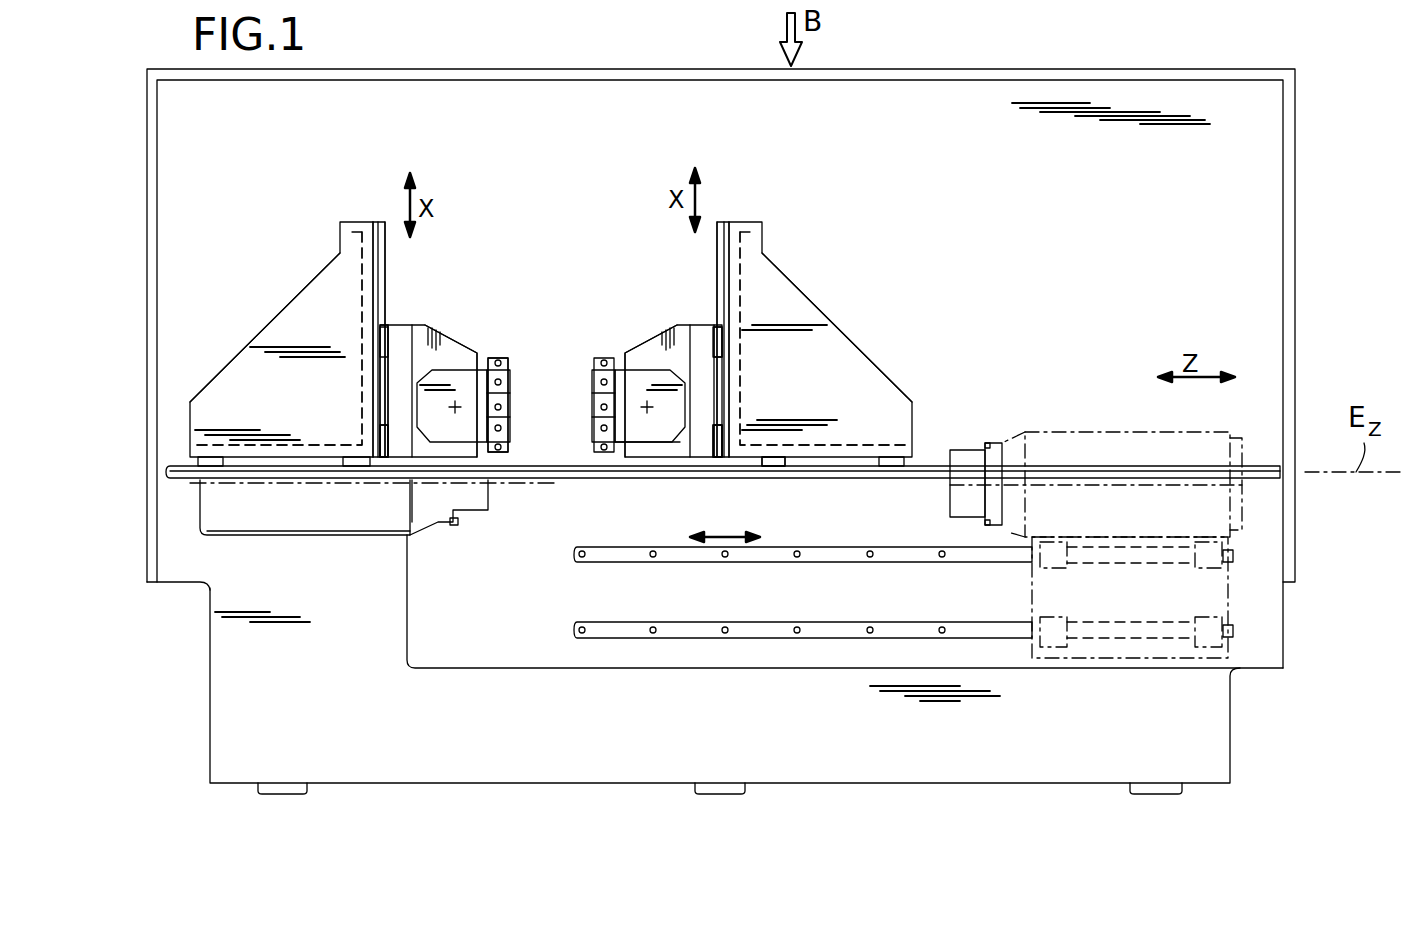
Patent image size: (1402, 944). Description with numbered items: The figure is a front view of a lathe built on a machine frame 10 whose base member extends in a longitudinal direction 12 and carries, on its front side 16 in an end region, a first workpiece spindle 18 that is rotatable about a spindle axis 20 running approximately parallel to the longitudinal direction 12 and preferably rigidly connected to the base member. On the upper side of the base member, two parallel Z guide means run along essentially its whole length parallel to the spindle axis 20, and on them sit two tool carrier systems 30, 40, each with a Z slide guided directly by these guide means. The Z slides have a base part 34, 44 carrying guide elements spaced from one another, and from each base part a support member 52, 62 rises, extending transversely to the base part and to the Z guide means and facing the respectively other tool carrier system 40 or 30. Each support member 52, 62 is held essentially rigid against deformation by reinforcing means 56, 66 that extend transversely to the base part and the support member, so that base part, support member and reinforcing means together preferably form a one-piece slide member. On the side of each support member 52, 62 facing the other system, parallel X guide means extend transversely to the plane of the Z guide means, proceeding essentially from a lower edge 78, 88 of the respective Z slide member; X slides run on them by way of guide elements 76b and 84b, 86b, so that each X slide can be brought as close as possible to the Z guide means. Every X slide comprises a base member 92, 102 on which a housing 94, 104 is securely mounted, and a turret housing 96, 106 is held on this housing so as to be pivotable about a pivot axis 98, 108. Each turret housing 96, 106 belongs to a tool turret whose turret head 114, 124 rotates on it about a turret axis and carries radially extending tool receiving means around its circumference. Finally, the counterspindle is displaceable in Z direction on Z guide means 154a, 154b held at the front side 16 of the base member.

The machine frame 10 is at (762, 746).
The longitudinal direction 12 is at (732, 537).
The front side 16 is at (443, 628).
The first workpiece spindle 18 is at (240, 512).
The spindle axis 20 is at (292, 487).
The tool carrier system 30 is at (258, 328).
The base part 34 is at (290, 442).
The tool carrier system 40 is at (795, 276).
The base part 44 is at (838, 450).
The support member 52 is at (373, 262).
The reinforcing means 56 is at (303, 320).
The support member 62 is at (735, 263).
The reinforcing means 66 is at (820, 327).
The guide element 76b is at (400, 458).
The lower edge 78 is at (385, 457).
The guide element 84b is at (725, 350).
The guide element 86b is at (745, 440).
The lower edge 88 is at (723, 452).
The base member 92 is at (400, 347).
The housing 94 is at (430, 343).
The turret housing 96 is at (425, 442).
The pivot axis 98 is at (455, 410).
The base member 102 is at (703, 325).
The housing 104 is at (668, 330).
The turret housing 106 is at (622, 447).
The pivot axis 108 is at (650, 412).
The turret head 114 is at (500, 360).
The turret head 124 is at (600, 360).
The Z guide means 154a is at (778, 632).
The Z guide means 154b is at (897, 556).